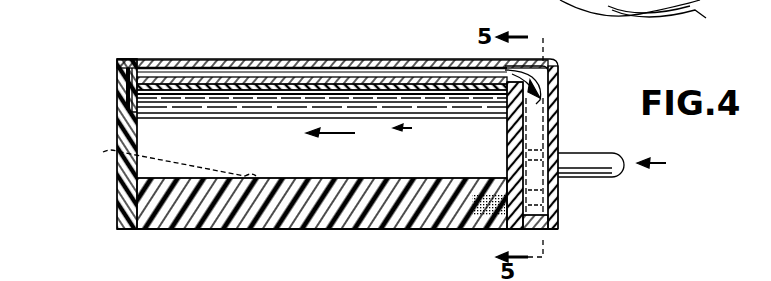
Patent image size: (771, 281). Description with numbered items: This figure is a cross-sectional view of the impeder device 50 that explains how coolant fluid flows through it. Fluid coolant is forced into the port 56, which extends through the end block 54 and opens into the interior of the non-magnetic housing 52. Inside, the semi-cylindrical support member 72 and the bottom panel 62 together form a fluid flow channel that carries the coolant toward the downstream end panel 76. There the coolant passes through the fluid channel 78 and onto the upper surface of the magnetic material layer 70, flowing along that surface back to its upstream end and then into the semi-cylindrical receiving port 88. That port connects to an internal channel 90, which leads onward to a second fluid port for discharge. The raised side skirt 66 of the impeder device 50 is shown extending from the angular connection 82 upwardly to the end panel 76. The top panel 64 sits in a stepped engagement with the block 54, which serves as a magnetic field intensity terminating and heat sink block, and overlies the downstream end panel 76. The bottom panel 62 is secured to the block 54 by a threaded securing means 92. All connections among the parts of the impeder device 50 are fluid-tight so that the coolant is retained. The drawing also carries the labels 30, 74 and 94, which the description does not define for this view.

The drum 30 is at (657, 19).
The impeder device 50 is at (80, 203).
The non-magnetic housing 52 is at (270, 62).
The end block 54 is at (562, 102).
The port 56 is at (598, 180).
The bottom panel 62 is at (363, 232).
The top panel 64 is at (192, 60).
The raised side skirt 66 is at (317, 151).
The magnetic material layer 70 is at (320, 80).
The semi-cylindrical support member 72 is at (393, 88).
The base 74 is at (146, 255).
The downstream end panel 76 is at (117, 124).
The fluid channel 78 is at (127, 106).
The angular connection 82 is at (270, 231).
The semi-cylindrical receiving port 88 is at (555, 62).
The internal channel 90 is at (560, 120).
The threaded securing means 92 is at (470, 229).
The support 94 is at (258, 278).